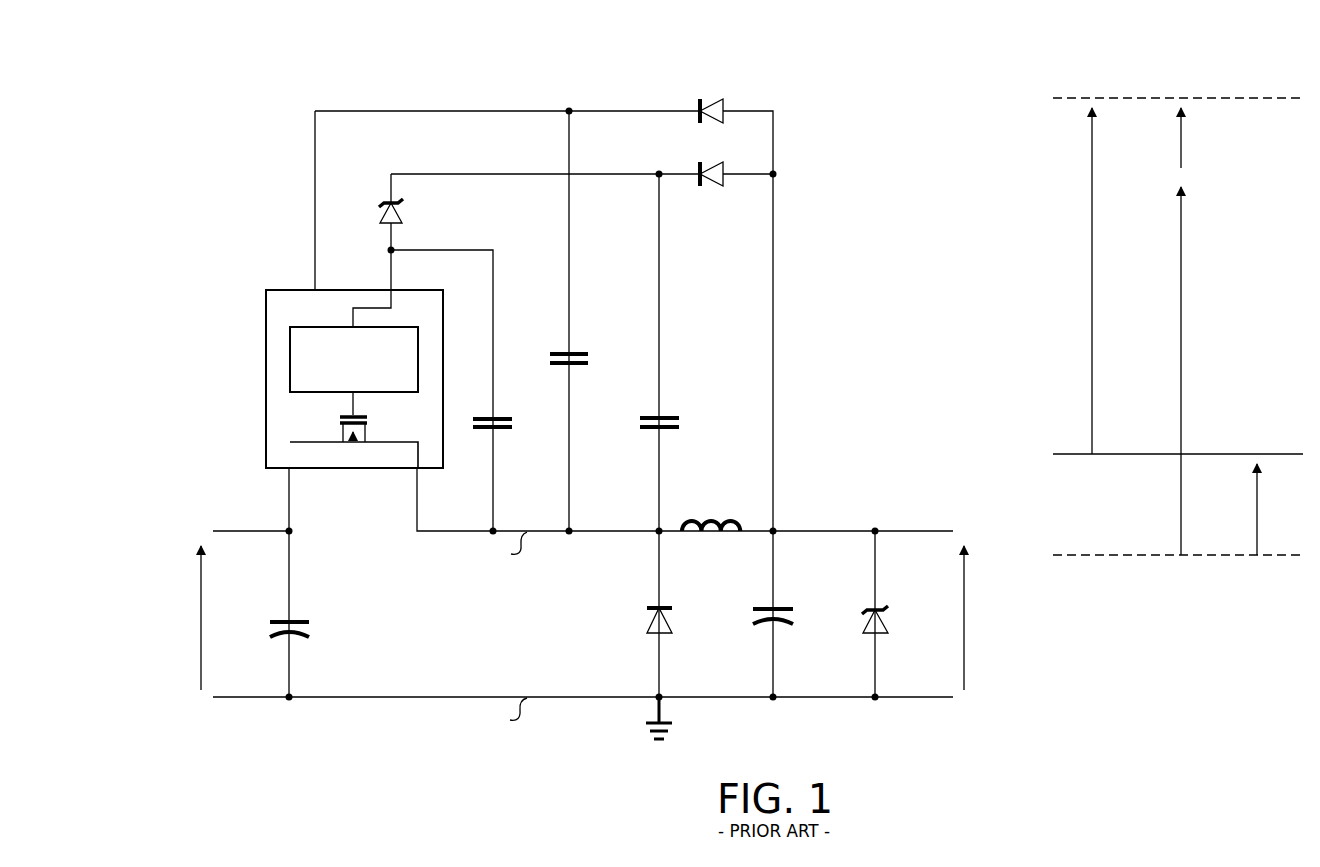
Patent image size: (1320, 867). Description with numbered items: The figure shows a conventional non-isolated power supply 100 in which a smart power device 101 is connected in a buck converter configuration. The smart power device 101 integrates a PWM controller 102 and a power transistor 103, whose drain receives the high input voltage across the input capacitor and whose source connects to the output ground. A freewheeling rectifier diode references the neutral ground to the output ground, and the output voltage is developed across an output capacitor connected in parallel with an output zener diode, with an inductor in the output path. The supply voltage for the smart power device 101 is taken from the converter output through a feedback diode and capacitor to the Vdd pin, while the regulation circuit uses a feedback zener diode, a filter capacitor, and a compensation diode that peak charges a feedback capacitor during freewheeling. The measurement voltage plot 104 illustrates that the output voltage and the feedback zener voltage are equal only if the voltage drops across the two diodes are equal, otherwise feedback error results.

The non-isolated power supply 100 is at (280, 82).
The smart power device 101 is at (266, 325).
The PWM controller 102 is at (338, 385).
The power transistor 103 is at (340, 417).
The measurement voltage plot 104 is at (1016, 145).